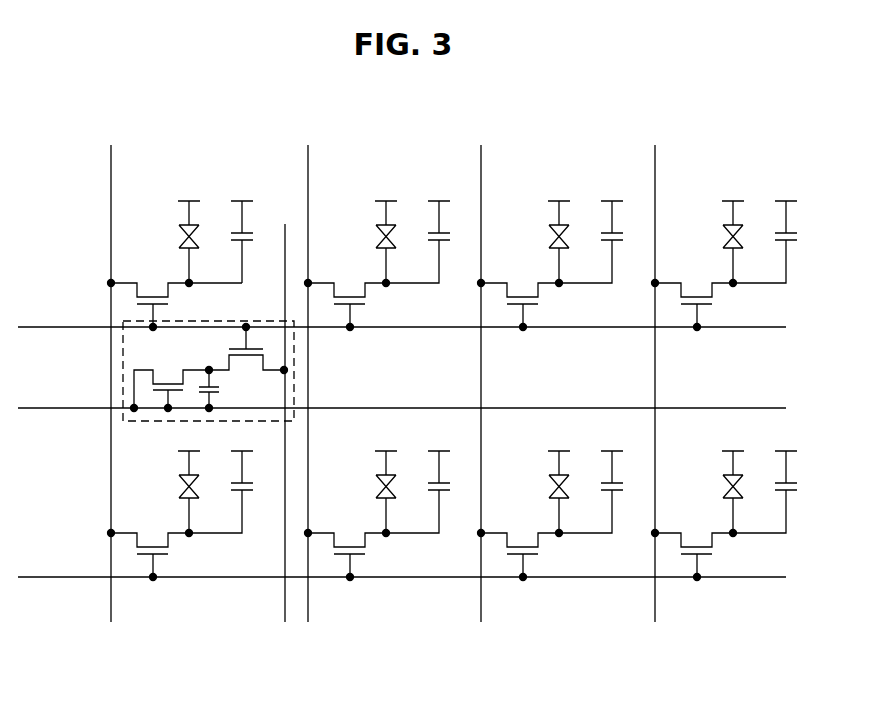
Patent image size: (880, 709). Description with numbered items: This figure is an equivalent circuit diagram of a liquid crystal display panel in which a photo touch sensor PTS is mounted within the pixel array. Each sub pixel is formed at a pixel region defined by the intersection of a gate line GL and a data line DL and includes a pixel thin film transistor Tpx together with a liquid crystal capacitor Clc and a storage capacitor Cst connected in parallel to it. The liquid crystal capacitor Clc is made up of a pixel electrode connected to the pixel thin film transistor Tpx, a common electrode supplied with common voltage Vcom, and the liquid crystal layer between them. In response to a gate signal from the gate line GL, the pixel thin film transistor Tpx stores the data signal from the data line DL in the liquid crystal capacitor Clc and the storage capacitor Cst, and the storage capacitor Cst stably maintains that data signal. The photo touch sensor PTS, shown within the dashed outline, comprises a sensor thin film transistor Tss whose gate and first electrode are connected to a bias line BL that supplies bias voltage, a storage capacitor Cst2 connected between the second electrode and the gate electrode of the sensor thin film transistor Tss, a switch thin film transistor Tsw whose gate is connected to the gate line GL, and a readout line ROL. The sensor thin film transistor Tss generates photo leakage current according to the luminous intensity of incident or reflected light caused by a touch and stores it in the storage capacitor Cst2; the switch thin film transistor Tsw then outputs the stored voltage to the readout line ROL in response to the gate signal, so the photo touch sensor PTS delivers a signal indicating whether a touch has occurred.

The data line DL is at (111, 167).
The gate line GL is at (72, 327).
The bias line BL is at (72, 408).
The readout line ROL is at (285, 594).
The common voltage Vcom is at (188, 205).
The liquid crystal capacitor Clc is at (176, 256).
The storage capacitor Cst is at (229, 242).
The pixel thin film transistor Tpx is at (175, 305).
The photo touch sensor PTS is at (294, 378).
The switch thin film transistor Tsw is at (243, 349).
The sensor thin film transistor Tss is at (170, 384).
The storage capacitor Cst2 is at (228, 391).